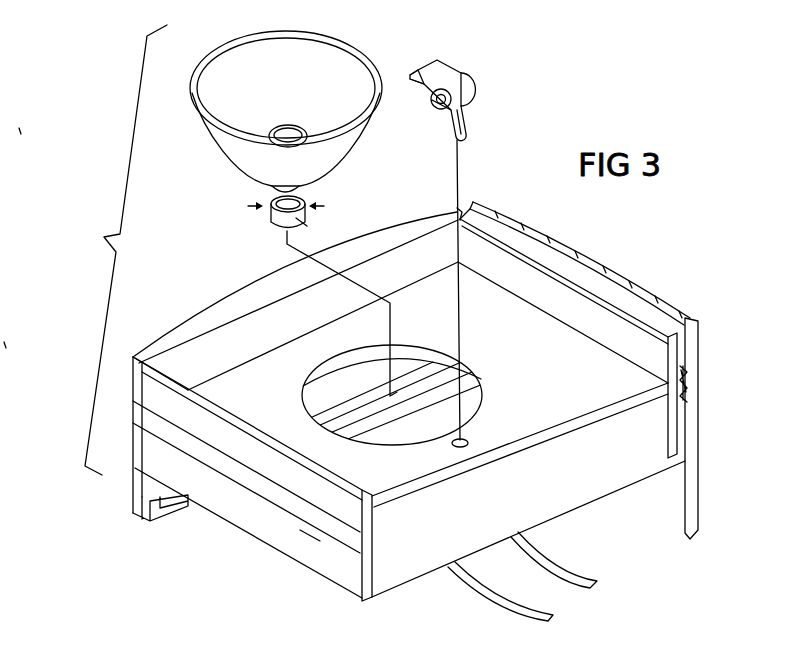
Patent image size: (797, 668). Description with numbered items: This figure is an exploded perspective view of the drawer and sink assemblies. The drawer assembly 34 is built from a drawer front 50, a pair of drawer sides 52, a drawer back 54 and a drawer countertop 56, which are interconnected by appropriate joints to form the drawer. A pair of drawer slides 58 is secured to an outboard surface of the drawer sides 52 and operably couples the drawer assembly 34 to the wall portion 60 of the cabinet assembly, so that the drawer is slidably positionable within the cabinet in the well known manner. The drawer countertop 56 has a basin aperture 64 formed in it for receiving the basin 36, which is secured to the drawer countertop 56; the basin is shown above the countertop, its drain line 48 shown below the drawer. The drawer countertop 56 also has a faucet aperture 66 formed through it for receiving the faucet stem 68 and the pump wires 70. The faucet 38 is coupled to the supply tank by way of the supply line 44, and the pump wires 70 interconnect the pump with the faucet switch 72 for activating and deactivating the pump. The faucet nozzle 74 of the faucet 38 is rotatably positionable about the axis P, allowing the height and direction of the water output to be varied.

The drawer assembly 34 is at (435, 421).
The basin 36 is at (220, 189).
The faucet 38 is at (458, 90).
The supply line 44 is at (582, 571).
The drain line 48 is at (496, 598).
The drawer front 50 is at (203, 320).
The drawer sides 52 is at (547, 280).
The drawer back 54 is at (550, 507).
The drawer countertop 56 is at (626, 376).
The drawer slides 58 is at (687, 405).
The wall portion 60 is at (698, 480).
The basin aperture 64 is at (415, 347).
The faucet aperture 66 is at (467, 440).
The faucet stem 68 is at (448, 136).
The pump wires 70 is at (477, 135).
The faucet switch 72 is at (433, 118).
The faucet nozzle 74 is at (413, 75).
The axis P is at (463, 92).